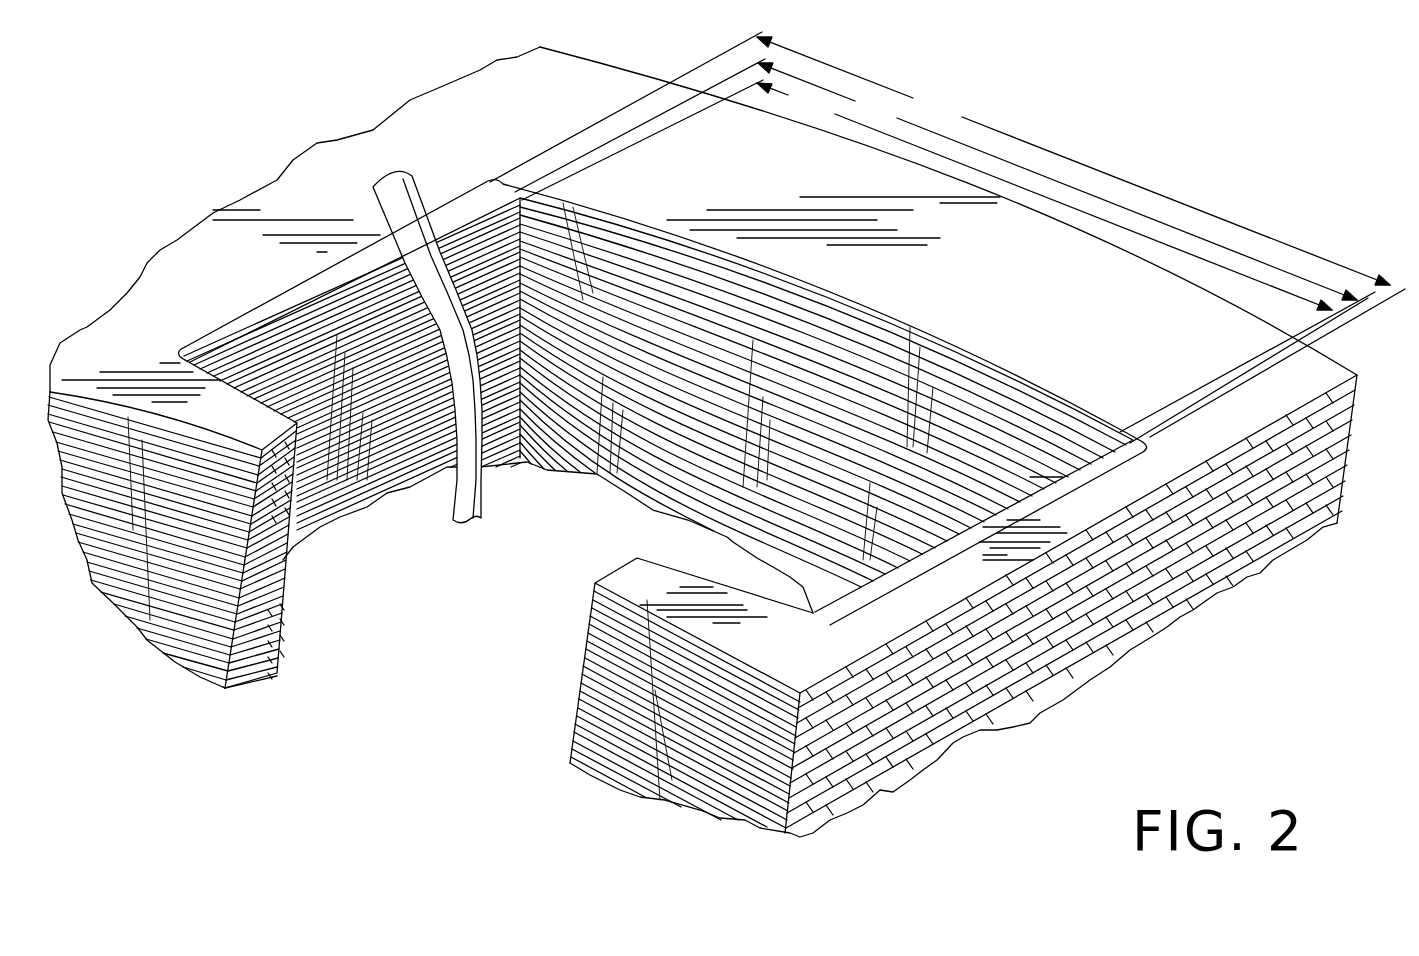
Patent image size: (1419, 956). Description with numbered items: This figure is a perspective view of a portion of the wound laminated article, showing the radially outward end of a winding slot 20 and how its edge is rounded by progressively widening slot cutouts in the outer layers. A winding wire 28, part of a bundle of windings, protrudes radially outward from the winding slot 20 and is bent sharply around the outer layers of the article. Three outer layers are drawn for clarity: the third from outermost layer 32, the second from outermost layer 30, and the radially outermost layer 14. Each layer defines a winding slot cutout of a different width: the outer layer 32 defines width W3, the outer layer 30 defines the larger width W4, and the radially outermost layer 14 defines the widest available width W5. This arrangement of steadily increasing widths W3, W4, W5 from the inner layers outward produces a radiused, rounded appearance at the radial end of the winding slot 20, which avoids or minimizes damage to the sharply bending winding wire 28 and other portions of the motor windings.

The radially outermost layer 14 is at (543, 87).
The winding slot 20 is at (445, 607).
The winding wire 28 is at (397, 184).
The second from outermost layer 30 is at (280, 310).
The third from outermost layer 32 is at (242, 353).
The winding slot cutout width W3 is at (927, 195).
The winding slot cutout width W4 is at (936, 179).
The winding slot cutout width W5 is at (947, 234).